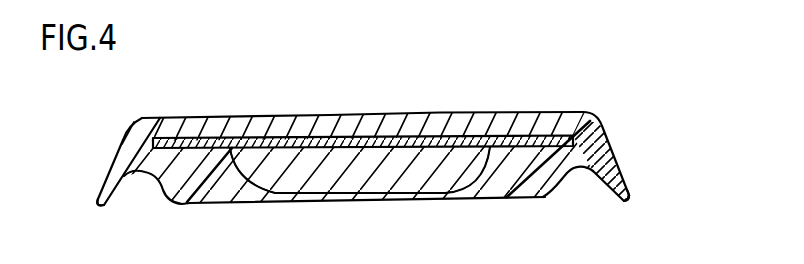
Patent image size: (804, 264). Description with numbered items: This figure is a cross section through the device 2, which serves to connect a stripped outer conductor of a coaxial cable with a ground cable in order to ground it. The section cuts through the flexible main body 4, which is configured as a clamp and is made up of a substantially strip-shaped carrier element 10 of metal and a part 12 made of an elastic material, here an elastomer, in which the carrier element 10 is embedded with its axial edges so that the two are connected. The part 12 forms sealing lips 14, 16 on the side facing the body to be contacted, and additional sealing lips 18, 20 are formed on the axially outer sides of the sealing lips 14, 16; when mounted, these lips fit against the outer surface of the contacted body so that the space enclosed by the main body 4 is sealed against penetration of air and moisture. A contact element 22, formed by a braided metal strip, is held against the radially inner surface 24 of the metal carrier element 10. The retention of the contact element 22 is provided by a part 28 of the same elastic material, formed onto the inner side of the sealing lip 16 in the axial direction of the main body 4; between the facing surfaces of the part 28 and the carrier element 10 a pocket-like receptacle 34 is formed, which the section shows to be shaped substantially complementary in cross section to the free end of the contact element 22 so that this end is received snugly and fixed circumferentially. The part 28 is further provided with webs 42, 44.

The device 2 is at (383, 104).
The main body 4 is at (545, 113).
The carrier element 10 is at (338, 137).
The part made of elastic material 12 is at (279, 117).
The sealing lip 14 is at (183, 203).
The sealing lip 16 is at (537, 200).
The additional sealing lip 18 is at (97, 207).
The additional sealing lip 20 is at (634, 198).
The contact element 22 is at (308, 183).
The radially inner surface 24 is at (405, 192).
The part 28 is at (355, 198).
The pocket-like receptacle 34 is at (439, 189).
The web 42 is at (234, 185).
The web 44 is at (478, 187).